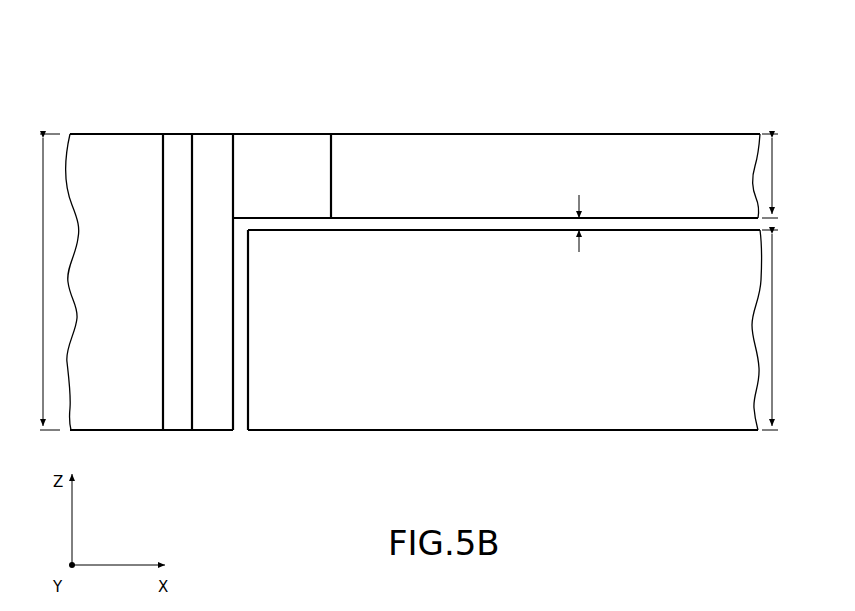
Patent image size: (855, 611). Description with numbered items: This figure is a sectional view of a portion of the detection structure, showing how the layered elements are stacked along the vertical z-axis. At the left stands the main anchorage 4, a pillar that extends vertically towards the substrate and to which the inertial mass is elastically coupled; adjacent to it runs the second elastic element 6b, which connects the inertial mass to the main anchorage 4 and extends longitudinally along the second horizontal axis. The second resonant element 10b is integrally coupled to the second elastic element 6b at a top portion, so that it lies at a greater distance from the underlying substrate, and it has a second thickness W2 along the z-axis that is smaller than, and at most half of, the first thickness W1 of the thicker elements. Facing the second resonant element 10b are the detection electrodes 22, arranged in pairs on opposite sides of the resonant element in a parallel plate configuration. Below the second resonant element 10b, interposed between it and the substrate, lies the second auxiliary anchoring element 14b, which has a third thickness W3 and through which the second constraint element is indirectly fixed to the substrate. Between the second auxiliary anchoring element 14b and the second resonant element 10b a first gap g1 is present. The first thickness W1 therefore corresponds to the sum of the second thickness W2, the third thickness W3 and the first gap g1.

The main anchorage 4 is at (94, 157).
The second elastic element 6b is at (177, 150).
The second resonant element 10b is at (283, 148).
The detection electrodes 22 is at (505, 155).
The second auxiliary anchoring element 14b is at (441, 412).
The first gap g1 is at (588, 222).
The first thickness W1 is at (39, 282).
The second thickness W2 is at (782, 176).
The third thickness W3 is at (782, 330).